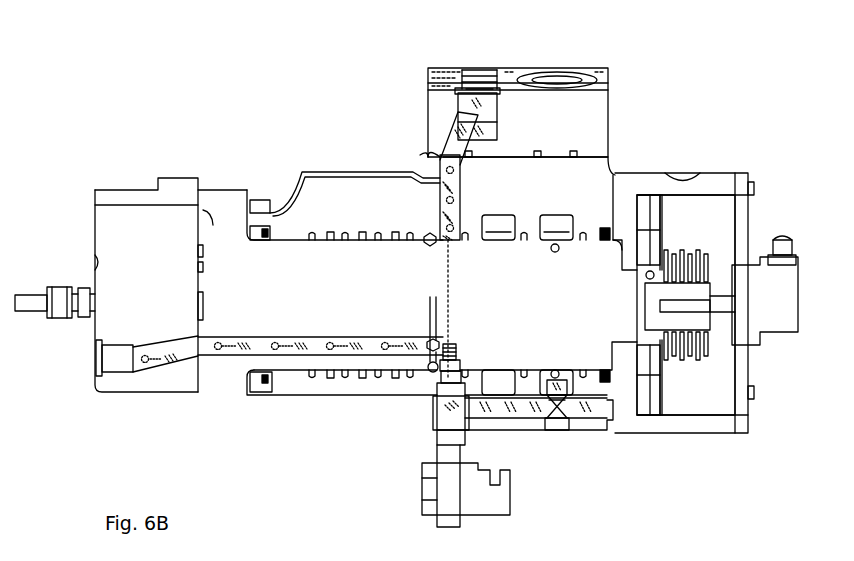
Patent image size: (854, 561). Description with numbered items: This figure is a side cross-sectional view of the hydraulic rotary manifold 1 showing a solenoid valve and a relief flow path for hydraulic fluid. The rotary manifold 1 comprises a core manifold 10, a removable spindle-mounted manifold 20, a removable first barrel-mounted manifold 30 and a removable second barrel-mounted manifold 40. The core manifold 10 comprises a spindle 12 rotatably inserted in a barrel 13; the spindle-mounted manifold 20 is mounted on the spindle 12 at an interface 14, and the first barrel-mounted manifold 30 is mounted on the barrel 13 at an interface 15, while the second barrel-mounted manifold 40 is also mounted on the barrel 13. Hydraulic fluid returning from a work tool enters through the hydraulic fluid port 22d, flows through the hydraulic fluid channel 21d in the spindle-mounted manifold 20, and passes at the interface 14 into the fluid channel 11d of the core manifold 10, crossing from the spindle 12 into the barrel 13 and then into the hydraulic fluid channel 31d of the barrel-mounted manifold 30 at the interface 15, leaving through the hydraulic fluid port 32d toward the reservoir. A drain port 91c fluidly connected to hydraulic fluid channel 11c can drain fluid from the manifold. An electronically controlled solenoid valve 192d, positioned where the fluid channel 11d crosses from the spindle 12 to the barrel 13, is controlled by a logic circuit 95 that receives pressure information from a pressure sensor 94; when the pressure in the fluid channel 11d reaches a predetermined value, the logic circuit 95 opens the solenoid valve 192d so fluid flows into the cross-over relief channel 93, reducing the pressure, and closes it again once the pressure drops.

The hydraulic rotary manifold 1 is at (235, 82).
The core manifold 10 is at (272, 402).
The hydraulic fluid channel 11c is at (562, 385).
The hydraulic fluid channel 11d is at (238, 352).
The spindle 12 is at (245, 212).
The barrel 13 is at (355, 187).
The interface 14 is at (205, 215).
The interface 15 is at (600, 160).
The spindle-mounted manifold 20 is at (140, 218).
The hydraulic fluid channel 21d is at (155, 360).
The hydraulic fluid port 22d is at (95, 355).
The first barrel-mounted manifold 30 is at (592, 110).
The hydraulic fluid channel 31d is at (455, 128).
The hydraulic fluid port 32d is at (478, 70).
The second barrel-mounted manifold 40 is at (783, 312).
The drain port 91c is at (553, 437).
The cross-over relief channel 93 is at (520, 410).
The pressure sensor 94 is at (430, 318).
The logic circuit 95 is at (430, 493).
The solenoid valve 192d is at (445, 402).